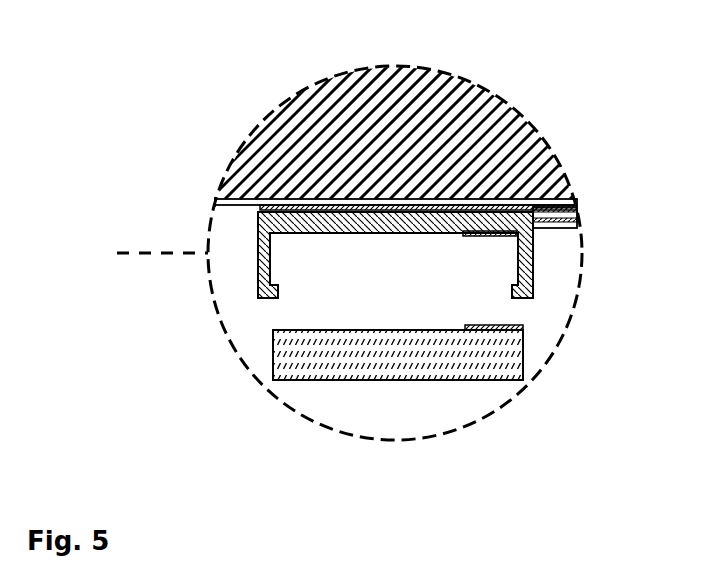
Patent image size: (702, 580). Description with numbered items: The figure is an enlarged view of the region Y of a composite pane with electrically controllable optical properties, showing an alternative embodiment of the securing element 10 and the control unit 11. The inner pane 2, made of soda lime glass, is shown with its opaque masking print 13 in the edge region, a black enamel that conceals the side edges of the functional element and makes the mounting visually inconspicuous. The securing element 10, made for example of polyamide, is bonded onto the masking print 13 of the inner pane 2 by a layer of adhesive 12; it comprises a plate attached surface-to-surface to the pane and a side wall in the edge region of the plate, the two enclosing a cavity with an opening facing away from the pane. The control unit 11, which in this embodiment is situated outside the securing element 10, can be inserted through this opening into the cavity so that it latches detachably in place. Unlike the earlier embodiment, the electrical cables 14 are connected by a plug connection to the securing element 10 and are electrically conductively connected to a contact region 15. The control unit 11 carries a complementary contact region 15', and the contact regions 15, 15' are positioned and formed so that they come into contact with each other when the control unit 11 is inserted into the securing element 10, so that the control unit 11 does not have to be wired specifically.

The inner pane 2 is at (495, 97).
The region Y is at (146, 256).
The securing element 10 is at (260, 225).
The control unit 11 is at (293, 363).
The adhesive 12 is at (216, 204).
The masking print 13 is at (566, 199).
The electrical cables 14 is at (576, 228).
The contact region 15 is at (536, 332).
The contact region 15' is at (538, 428).